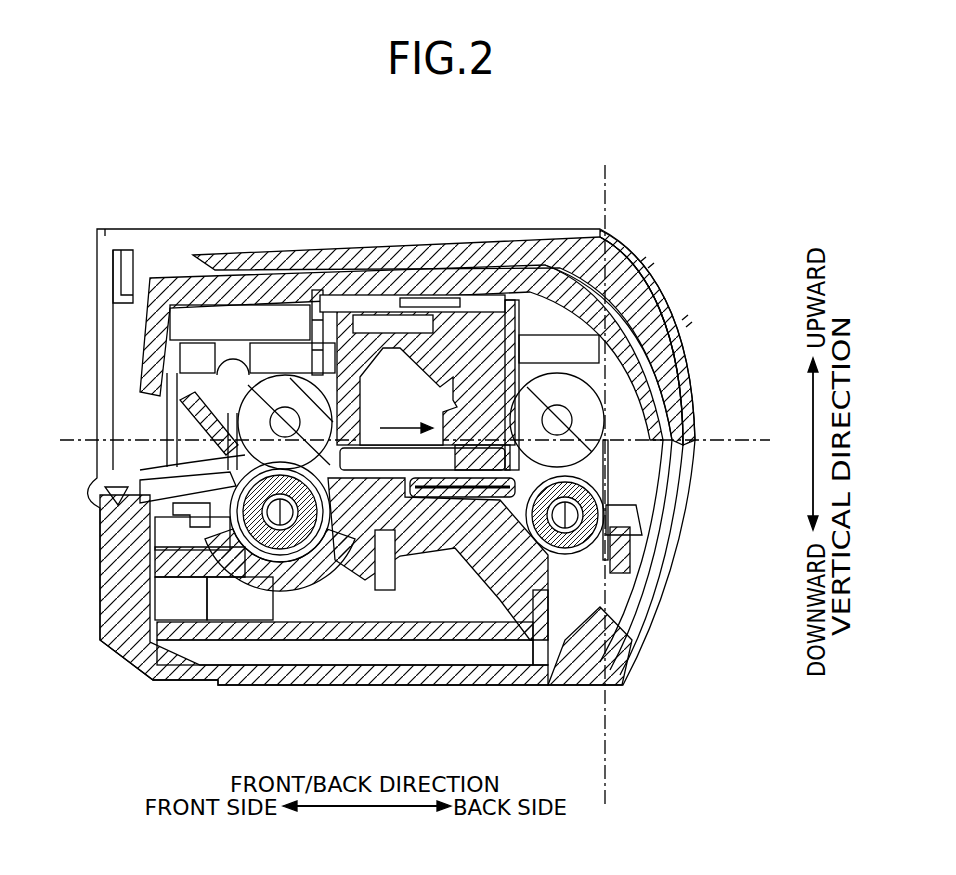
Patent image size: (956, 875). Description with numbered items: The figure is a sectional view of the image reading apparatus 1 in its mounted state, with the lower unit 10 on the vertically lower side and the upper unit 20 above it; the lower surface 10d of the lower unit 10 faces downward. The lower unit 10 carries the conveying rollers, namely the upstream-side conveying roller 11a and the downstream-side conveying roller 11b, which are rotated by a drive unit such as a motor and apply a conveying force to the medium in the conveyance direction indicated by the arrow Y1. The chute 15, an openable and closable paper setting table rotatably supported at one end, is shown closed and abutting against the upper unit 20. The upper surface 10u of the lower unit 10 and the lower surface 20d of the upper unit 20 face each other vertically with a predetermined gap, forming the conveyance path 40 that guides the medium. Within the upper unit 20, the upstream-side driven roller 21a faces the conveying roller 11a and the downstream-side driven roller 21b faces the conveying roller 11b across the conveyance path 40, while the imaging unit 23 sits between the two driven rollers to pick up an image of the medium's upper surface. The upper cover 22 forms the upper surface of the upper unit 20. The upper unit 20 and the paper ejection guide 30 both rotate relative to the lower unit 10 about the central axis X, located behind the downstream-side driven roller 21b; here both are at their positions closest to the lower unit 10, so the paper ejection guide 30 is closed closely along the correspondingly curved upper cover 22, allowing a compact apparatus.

The image reading apparatus 1 is at (93, 122).
The lower unit 10 is at (197, 692).
The upper surface of the lower unit 10u is at (452, 468).
The lower surface of the lower unit 10d is at (435, 688).
The upstream-side conveying roller 11a is at (271, 562).
The downstream-side conveying roller 11b is at (565, 560).
The chute 15 is at (108, 402).
The upper unit 20 is at (172, 258).
The lower surface of the upper unit 20d is at (470, 478).
The upstream-side driven roller 21a is at (243, 395).
The downstream-side driven roller 21b is at (514, 420).
The upper cover 22 is at (316, 286).
The imaging unit 23 is at (430, 282).
The paper ejection guide 30 is at (372, 243).
The conveyance path 40 is at (340, 484).
The central axis X is at (680, 473).
The arrow indicating conveyance direction Y1 is at (406, 419).